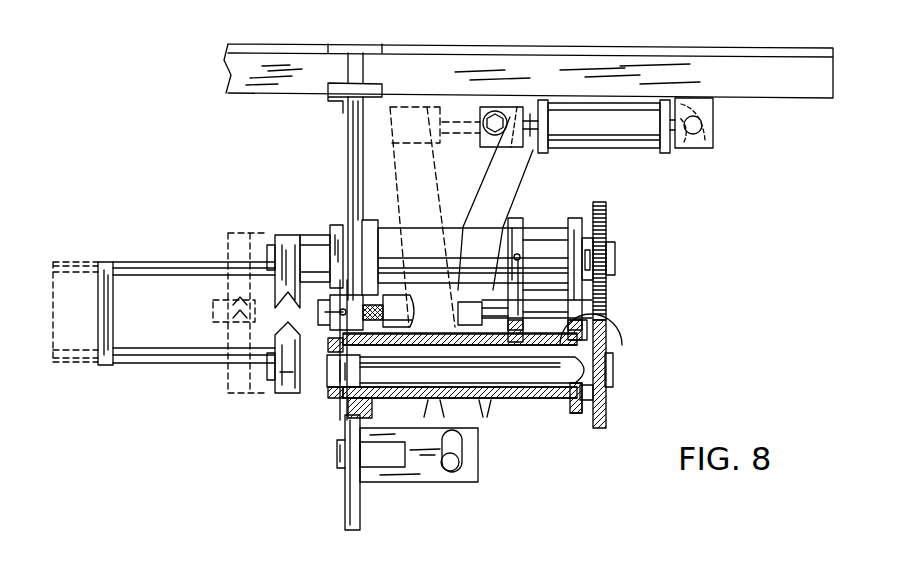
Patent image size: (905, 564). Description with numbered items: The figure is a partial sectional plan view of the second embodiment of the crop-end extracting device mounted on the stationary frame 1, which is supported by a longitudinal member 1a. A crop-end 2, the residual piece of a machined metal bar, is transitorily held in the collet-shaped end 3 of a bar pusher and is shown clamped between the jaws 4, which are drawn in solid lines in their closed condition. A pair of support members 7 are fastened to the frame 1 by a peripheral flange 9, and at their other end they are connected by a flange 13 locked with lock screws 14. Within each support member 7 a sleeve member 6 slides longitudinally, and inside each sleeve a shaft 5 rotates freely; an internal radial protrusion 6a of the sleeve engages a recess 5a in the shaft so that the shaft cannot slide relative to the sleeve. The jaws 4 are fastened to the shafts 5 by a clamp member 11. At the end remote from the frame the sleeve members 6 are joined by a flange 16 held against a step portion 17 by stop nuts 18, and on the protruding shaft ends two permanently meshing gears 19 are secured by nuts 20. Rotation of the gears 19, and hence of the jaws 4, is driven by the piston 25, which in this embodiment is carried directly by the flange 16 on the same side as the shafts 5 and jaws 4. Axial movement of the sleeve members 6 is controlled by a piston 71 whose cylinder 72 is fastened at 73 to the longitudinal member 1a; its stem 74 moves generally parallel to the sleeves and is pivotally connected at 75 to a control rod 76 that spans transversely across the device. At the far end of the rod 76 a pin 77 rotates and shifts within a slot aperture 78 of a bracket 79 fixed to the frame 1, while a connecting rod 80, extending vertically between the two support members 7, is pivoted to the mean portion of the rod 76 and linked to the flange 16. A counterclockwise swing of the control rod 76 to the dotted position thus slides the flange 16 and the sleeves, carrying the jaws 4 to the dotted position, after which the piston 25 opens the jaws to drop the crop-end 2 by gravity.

The longitudinal member 1a is at (297, 60).
The stationary frame 1 is at (347, 490).
The crop-end 2 is at (213, 311).
The collet-shaped end of bar pusher 3 is at (336, 342).
The jaws 4 is at (290, 243).
The shaft 5 is at (538, 372).
The recess 5a is at (420, 340).
The sleeve member 6 is at (552, 250).
The internal radial protrusion 6a is at (345, 410).
The support member 7 is at (393, 238).
The peripheral flange 9 is at (366, 235).
The clamp member 11 is at (336, 243).
The flange 13 is at (515, 230).
The lock screws 14 is at (519, 256).
The flange 16 is at (576, 228).
The step portion 17 is at (608, 330).
The stop nuts 18 is at (598, 242).
The gears 19 is at (604, 300).
The nuts 20 is at (613, 252).
The piston 25 is at (173, 247).
The piston 71 is at (604, 92).
The cylinder 72 is at (645, 118).
The fastening point 73 is at (713, 130).
The stem 74 is at (534, 114).
The pivot connection 75 is at (497, 118).
The control rod 76 is at (486, 174).
The pin 77 is at (454, 464).
The slot aperture 78 is at (461, 446).
The bracket 79 is at (397, 470).
The connecting rod 80 is at (465, 305).